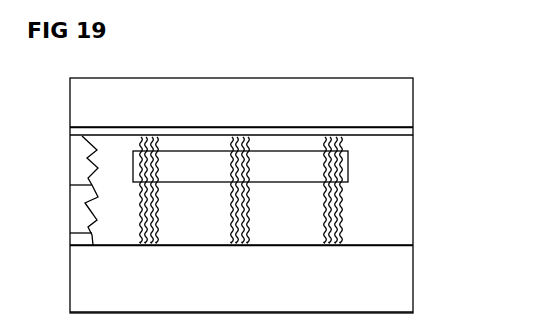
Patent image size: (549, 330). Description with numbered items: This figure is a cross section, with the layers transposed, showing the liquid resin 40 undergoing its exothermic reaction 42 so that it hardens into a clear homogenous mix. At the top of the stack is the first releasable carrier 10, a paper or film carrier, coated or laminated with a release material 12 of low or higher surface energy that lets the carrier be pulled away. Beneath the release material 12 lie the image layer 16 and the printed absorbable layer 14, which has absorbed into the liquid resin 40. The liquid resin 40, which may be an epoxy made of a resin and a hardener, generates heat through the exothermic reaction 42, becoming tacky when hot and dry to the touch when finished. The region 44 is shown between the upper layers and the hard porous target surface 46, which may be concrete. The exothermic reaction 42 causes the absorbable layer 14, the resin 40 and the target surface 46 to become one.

The first releasable carrier 10 is at (397, 103).
The release material 12 is at (408, 132).
The absorbable layer 14 is at (80, 157).
The image layer 16 is at (280, 158).
The liquid resin 40 is at (78, 197).
The exothermic reaction 42 is at (163, 235).
The dielectric layer 44 is at (387, 205).
The hard porous surface/target surface 46 is at (77, 237).